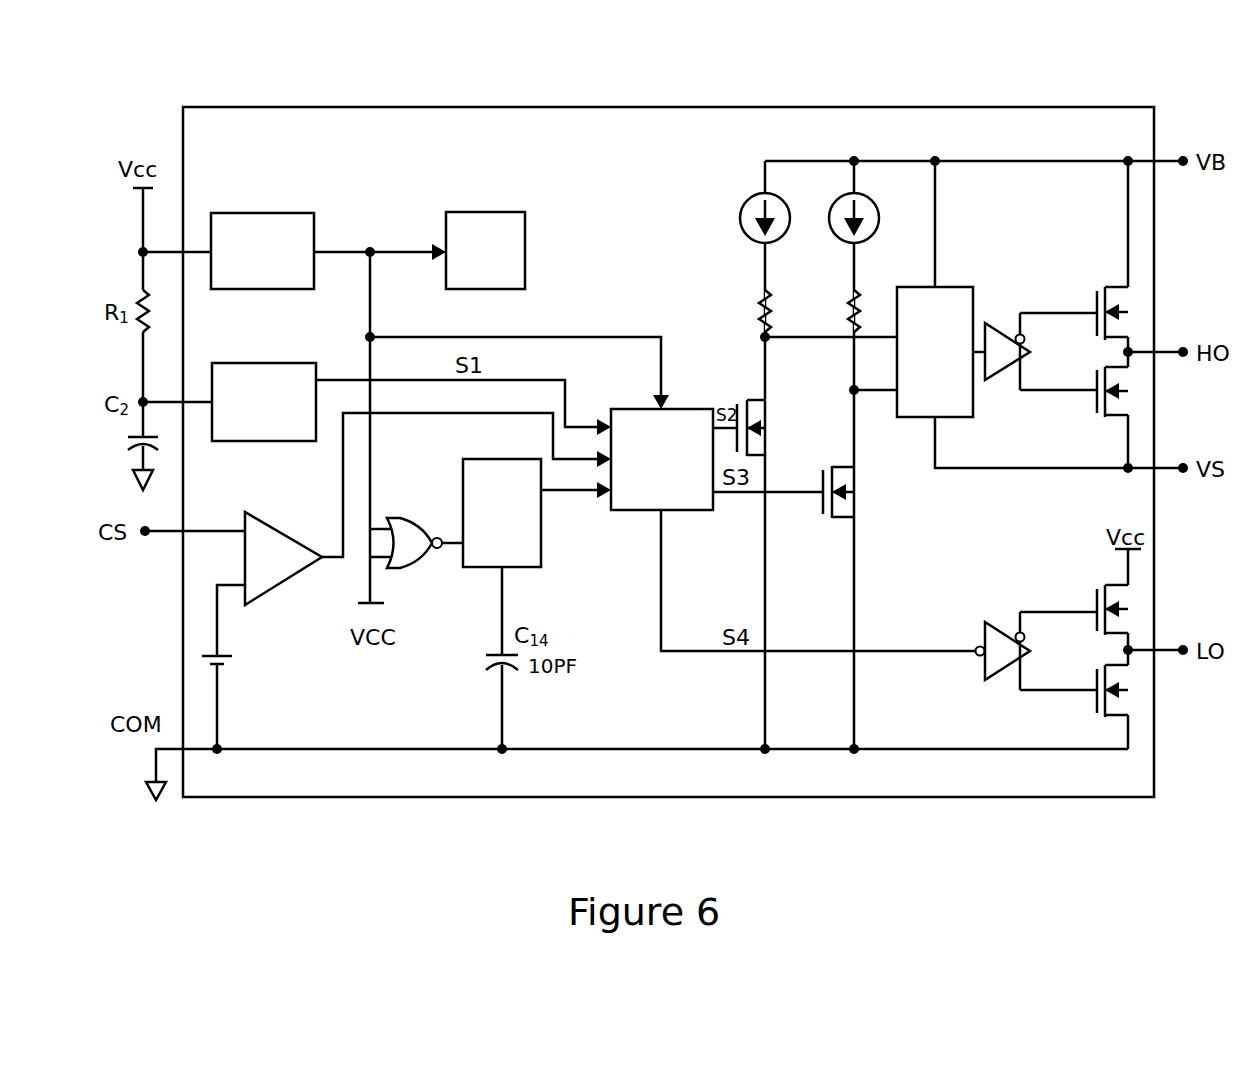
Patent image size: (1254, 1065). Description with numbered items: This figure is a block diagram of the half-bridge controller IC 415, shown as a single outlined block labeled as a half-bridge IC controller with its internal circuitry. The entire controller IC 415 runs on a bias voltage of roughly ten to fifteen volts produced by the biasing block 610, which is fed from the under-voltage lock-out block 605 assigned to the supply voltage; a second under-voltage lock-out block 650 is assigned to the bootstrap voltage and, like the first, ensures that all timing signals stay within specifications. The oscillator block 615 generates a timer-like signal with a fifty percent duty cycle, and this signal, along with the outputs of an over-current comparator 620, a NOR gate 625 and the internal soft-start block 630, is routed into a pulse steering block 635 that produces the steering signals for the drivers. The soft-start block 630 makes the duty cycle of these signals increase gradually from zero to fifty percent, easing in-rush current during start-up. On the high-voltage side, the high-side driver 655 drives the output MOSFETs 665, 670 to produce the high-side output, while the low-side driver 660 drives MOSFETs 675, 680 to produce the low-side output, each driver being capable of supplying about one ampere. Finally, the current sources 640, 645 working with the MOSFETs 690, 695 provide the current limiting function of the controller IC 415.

The half-bridge controller IC 415 is at (1062, 111).
The under-voltage lock-out block 605 is at (312, 218).
The biasing block 610 is at (518, 218).
The oscillator block 615 is at (338, 352).
The over-current comparator OVC 620 is at (276, 530).
The NOR gate 625 is at (428, 500).
The soft-start block 630 is at (536, 585).
The pulse steering block 635 is at (680, 412).
The current source 640 is at (740, 216).
The current source 645 is at (908, 196).
The under-voltage lock-out block 650 is at (978, 272).
The high-side driver 655 is at (998, 332).
The low-side driver 660 is at (996, 632).
The MOSFET 665 is at (1148, 314).
The MOSFET 670 is at (1148, 421).
The MOSFET 675 is at (1148, 613).
The MOSFET 680 is at (1153, 710).
The MOSFET 690 is at (780, 426).
The MOSFET 695 is at (874, 494).